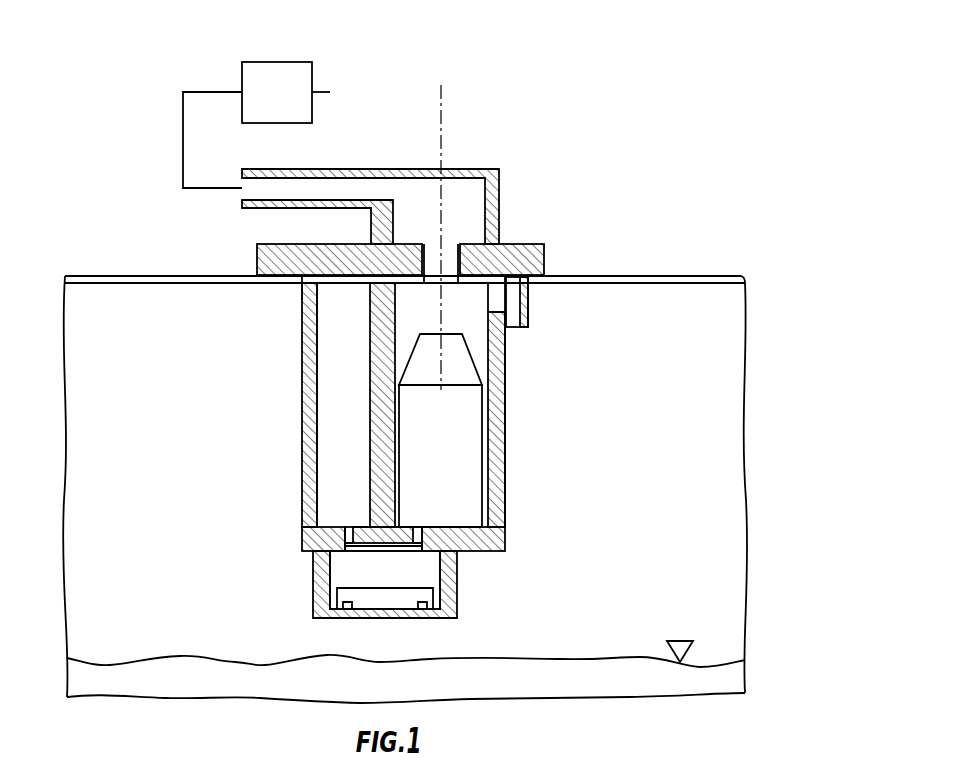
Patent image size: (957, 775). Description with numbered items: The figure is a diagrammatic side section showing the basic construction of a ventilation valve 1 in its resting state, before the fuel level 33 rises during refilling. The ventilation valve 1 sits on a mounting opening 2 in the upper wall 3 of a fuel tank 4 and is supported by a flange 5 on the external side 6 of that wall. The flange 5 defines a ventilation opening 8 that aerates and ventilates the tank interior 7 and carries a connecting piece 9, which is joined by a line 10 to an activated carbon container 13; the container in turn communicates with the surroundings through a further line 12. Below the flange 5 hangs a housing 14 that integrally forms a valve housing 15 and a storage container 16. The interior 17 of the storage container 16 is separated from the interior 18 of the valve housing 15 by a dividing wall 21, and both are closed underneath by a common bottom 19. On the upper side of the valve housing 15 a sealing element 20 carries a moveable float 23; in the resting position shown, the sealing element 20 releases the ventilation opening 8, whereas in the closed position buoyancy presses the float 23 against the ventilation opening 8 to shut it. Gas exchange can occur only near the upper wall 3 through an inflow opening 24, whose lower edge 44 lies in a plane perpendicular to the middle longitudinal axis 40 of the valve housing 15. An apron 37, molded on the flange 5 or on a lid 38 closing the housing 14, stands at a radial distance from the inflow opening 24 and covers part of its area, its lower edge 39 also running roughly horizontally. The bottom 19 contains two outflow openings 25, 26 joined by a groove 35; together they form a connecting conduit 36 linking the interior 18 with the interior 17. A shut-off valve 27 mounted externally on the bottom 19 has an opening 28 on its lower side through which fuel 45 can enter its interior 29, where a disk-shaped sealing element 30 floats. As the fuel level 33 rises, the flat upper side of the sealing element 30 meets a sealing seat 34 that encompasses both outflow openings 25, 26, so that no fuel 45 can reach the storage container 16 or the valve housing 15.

The ventilation valve 1 is at (375, 355).
The mounting opening 2 is at (302, 287).
The upper wall 3 is at (693, 277).
The fuel tank 4 is at (435, 460).
The flange 5 is at (263, 262).
The external side 6 is at (627, 275).
The tank interior 7 is at (720, 500).
The ventilation opening 8 is at (447, 267).
The connecting piece 9 is at (340, 173).
The line 10 is at (183, 148).
The line 12 is at (330, 92).
The activated carbon container 13 is at (283, 80).
The housing 14 is at (397, 460).
The valve housing 15 is at (509, 462).
The storage container 16 is at (301, 459).
The interior of the storage container 17 is at (327, 403).
The interior of the valve housing 18 is at (505, 370).
The bottom 19 is at (482, 543).
The sealing element 20 is at (427, 358).
The dividing wall 21 is at (373, 310).
The float 23 is at (455, 412).
The inflow opening 24 is at (510, 293).
The outflow opening 25 is at (417, 527).
The outflow opening 26 is at (350, 528).
The shut-off valve 27 is at (333, 605).
The opening 28 is at (395, 613).
The interior of the shut-off valve 29 is at (423, 568).
The sealing element 30 is at (367, 590).
The fuel level 33 is at (710, 663).
The sealing seat 34 is at (340, 574).
The groove 35 is at (390, 547).
The connecting conduit 36 is at (378, 545).
The apron 37 is at (510, 307).
The lid 38 is at (347, 278).
The lower edge of the apron 39 is at (523, 328).
The middle longitudinal axis 40 is at (442, 113).
The lower edge of the inflow opening 44 is at (506, 333).
The fuel 45 is at (660, 675).